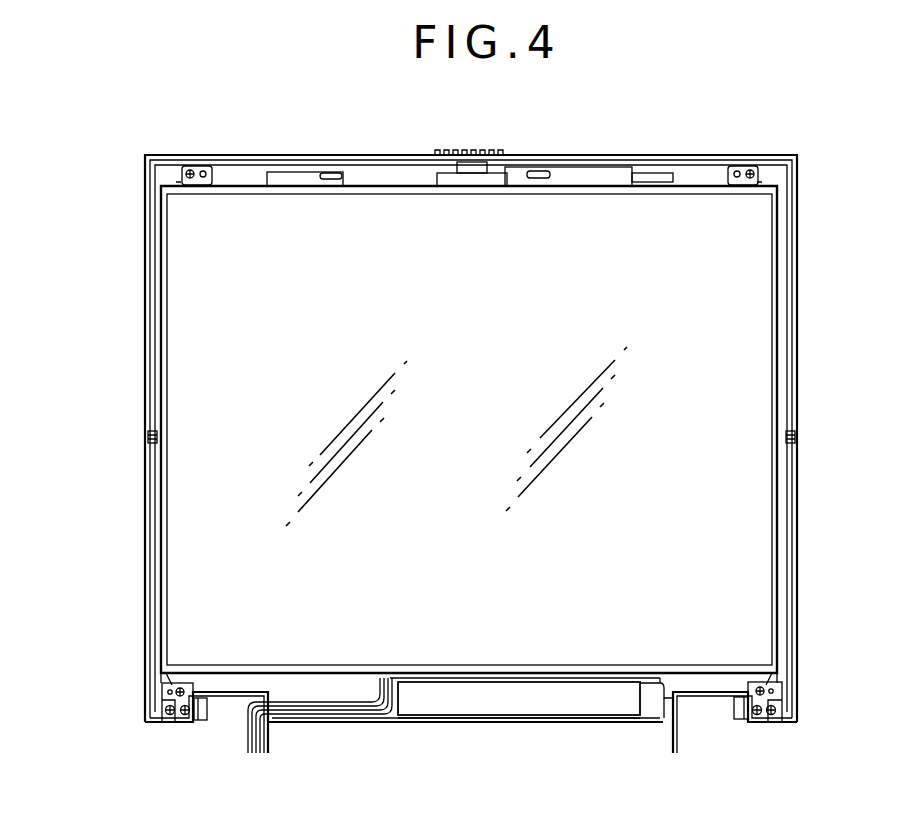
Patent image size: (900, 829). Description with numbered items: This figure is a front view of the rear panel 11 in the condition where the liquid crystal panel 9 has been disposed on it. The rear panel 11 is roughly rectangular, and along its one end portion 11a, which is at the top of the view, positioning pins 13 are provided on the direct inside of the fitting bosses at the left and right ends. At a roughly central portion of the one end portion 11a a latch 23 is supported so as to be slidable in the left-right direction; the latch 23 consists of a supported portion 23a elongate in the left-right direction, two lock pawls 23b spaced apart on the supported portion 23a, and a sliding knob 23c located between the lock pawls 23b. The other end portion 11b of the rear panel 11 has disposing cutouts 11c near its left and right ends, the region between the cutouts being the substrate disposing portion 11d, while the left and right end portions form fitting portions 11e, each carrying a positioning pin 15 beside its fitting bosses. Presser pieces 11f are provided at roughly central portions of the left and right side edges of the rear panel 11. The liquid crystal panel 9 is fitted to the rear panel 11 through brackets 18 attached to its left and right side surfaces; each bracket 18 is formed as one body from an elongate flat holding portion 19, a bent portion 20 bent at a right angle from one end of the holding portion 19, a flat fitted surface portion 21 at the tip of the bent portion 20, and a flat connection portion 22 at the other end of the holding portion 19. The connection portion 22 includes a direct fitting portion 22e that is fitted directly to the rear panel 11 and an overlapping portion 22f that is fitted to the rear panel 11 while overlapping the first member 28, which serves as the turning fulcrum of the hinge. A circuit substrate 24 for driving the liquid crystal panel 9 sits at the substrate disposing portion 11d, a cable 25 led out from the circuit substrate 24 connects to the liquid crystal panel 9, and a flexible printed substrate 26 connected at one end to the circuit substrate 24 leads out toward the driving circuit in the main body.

The liquid crystal panel 9 is at (663, 648).
The rear panel 11 is at (407, 156).
The one end portion 11a is at (685, 172).
The other end portion 11b is at (643, 713).
The disposing cutouts 11c is at (240, 694).
The substrate disposing portion 11d is at (556, 718).
The fitting portions 11e is at (153, 726).
The presser pieces 11f is at (152, 442).
The positioning pins 13 is at (207, 169).
The positioning pin 15 is at (167, 692).
The brackets 18 is at (178, 181).
The holding portion 19 is at (165, 404).
The bent portion 20 is at (176, 153).
The fitted surface portion 21 is at (194, 166).
The connection portion 22 is at (163, 707).
The direct fitting portion 22e is at (152, 676).
The overlapping portion 22f is at (178, 724).
The latch 23 is at (470, 142).
The supported portion 23a is at (618, 172).
The lock pawls 23b is at (333, 172).
The sliding knob 23c is at (467, 152).
The circuit substrate 24 is at (490, 700).
The cable 25 is at (655, 703).
The flexible printed substrate 26 is at (330, 716).
The first member 28 is at (205, 714).